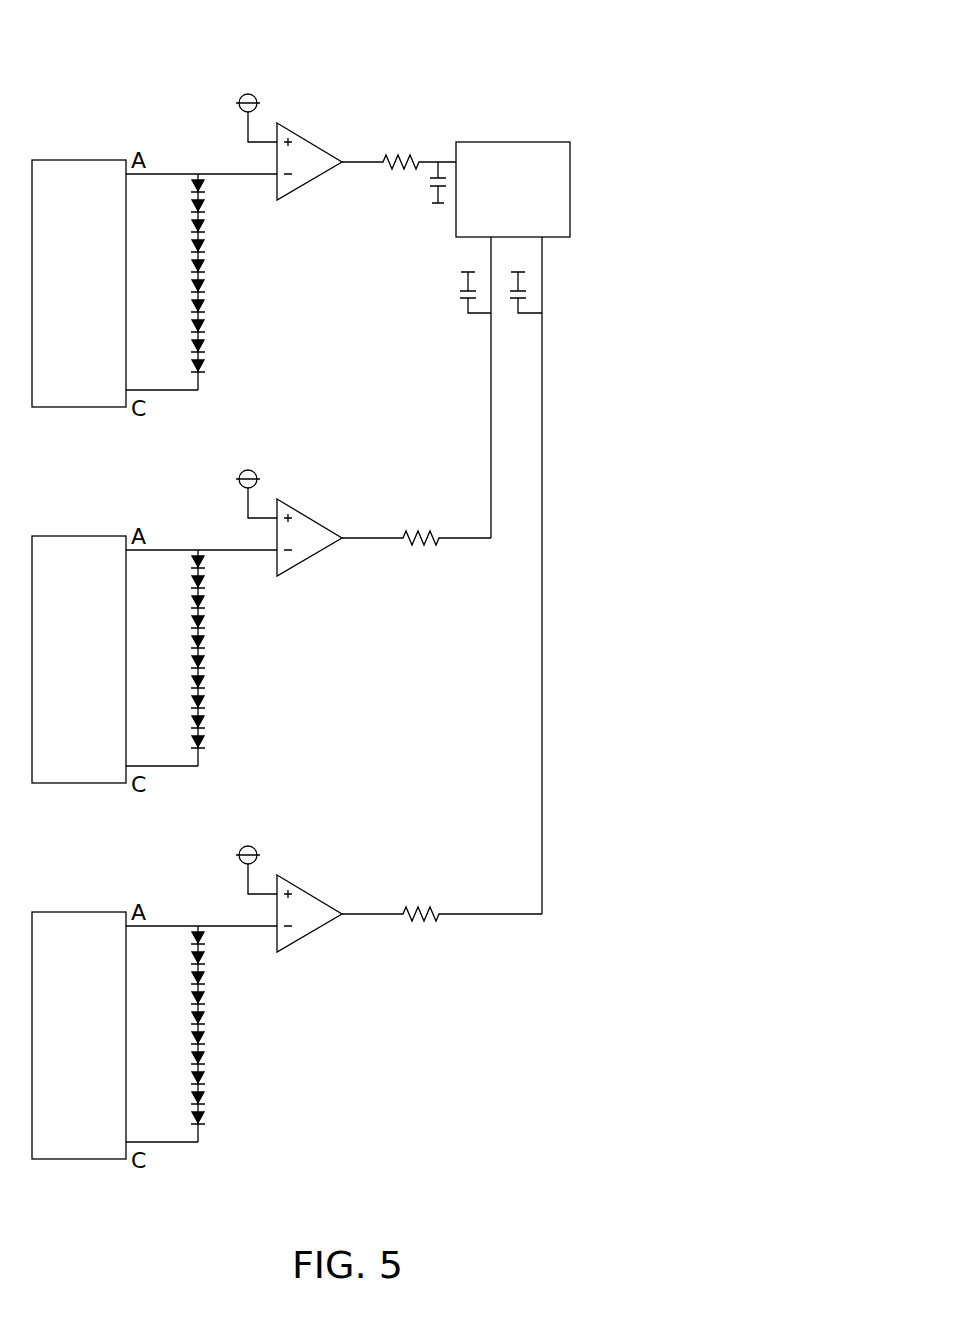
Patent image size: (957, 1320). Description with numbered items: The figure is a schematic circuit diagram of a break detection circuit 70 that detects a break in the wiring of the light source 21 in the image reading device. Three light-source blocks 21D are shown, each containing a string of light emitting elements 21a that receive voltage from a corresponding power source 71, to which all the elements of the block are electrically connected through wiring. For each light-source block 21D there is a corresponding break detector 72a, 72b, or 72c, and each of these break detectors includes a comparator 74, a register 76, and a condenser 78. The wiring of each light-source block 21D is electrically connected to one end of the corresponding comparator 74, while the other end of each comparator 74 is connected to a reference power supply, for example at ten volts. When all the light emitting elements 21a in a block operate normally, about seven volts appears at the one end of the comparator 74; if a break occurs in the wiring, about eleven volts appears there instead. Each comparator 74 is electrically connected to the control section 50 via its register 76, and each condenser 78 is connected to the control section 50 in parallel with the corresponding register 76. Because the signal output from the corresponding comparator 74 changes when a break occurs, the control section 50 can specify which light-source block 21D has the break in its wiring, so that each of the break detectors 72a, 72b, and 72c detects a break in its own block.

The light source 21 is at (92, 99).
The light emitting element 21a is at (205, 290).
The light-source block 21D is at (239, 690).
The control section 50 is at (570, 168).
The break detection circuit 70 is at (628, 94).
The power source 71 is at (58, 402).
The break detector 72a is at (374, 259).
The break detector 72b is at (376, 632).
The break detector 72c is at (376, 1007).
The comparator 74 is at (315, 186).
The register 76 is at (395, 153).
The condenser 78 is at (428, 197).